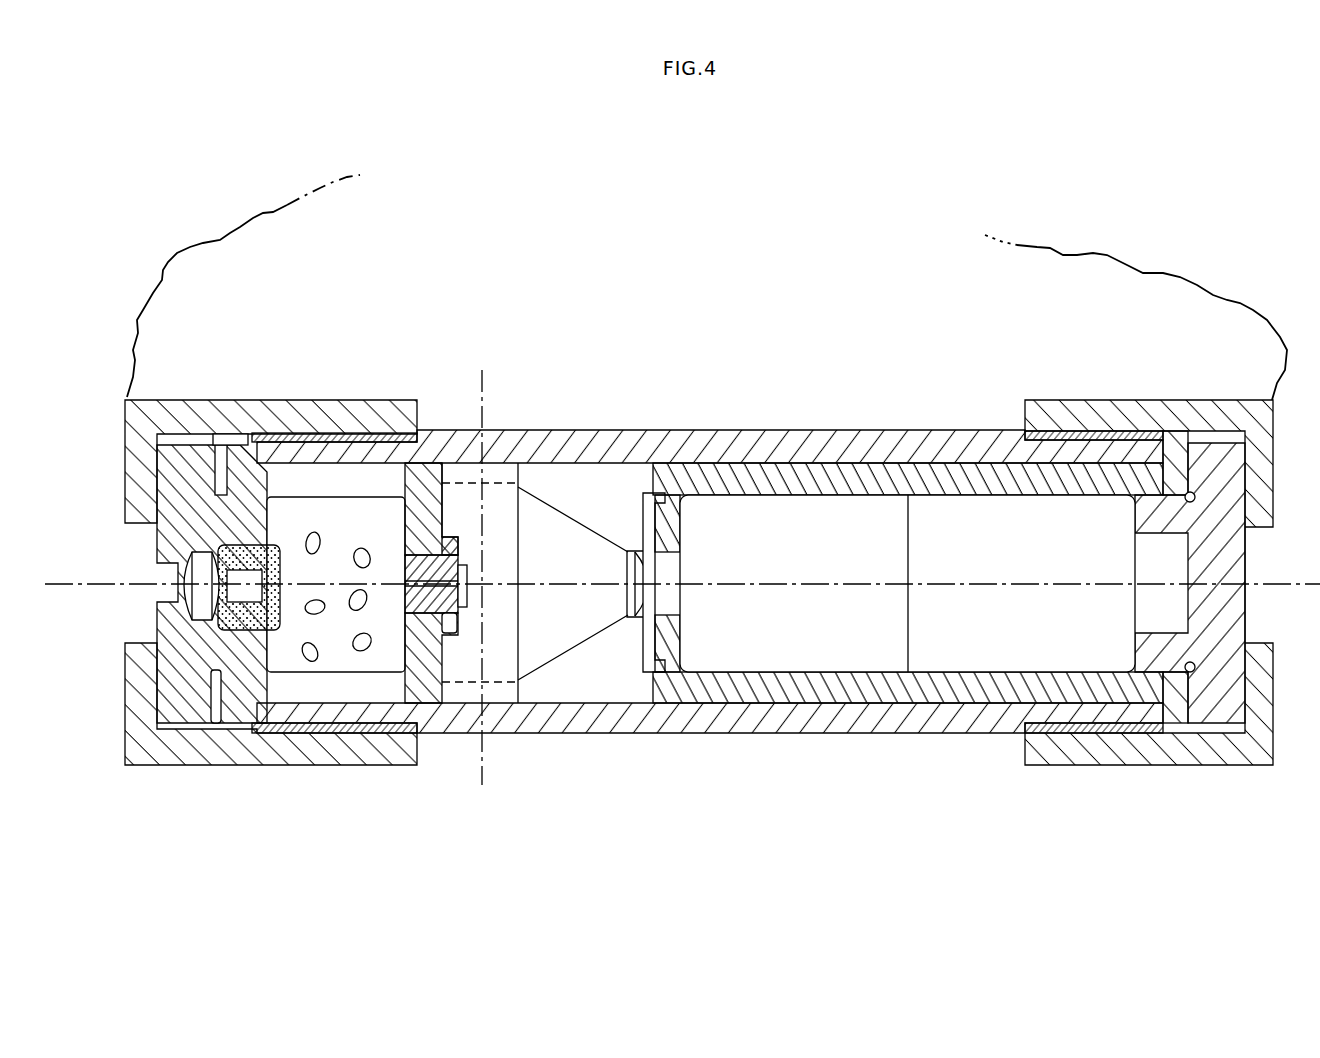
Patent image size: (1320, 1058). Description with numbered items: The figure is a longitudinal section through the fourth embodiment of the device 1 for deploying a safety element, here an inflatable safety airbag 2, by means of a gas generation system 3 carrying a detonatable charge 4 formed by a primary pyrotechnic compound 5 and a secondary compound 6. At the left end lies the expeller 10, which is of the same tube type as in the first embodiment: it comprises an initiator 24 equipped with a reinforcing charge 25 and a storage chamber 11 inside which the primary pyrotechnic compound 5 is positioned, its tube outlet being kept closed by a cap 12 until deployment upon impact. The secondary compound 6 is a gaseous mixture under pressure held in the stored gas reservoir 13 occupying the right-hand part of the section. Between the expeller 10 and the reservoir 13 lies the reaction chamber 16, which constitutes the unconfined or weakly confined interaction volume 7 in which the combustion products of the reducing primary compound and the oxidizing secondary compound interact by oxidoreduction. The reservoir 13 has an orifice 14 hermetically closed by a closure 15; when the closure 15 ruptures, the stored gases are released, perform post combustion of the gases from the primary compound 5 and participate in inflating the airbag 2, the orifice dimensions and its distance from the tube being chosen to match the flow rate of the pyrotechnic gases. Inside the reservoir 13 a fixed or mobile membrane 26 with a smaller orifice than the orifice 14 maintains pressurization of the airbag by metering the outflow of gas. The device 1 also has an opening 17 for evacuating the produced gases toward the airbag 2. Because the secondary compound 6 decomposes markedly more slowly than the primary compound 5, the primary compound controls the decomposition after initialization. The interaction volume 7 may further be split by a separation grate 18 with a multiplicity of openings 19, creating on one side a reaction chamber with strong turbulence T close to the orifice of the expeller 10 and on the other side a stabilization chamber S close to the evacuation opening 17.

The device 1 is at (715, 270).
The inflatable safety airbag 2 is at (1247, 303).
The gas generation system 3 is at (336, 372).
The detonatable charge 4 is at (1270, 793).
The primary pyrotechnic compound 5 is at (308, 652).
The secondary compound 6 is at (837, 660).
The unconfined or weakly confined interaction volume 7 is at (510, 658).
The expeller 10 is at (432, 478).
The storage chamber 11 is at (383, 655).
The cap 12 is at (442, 640).
The stored gas reservoir 13 is at (808, 470).
The orifice 14 is at (672, 567).
The closure 15 is at (640, 493).
The reaction chamber 16 is at (510, 567).
The opening 17 is at (497, 480).
The separation grate 18 is at (522, 482).
The openings 19 is at (510, 478).
The initiator 24 is at (160, 578).
The reinforcing charge 25 is at (230, 625).
The membrane 26 is at (910, 530).
The stabilization chamber S is at (455, 470).
The turbulence T is at (497, 700).